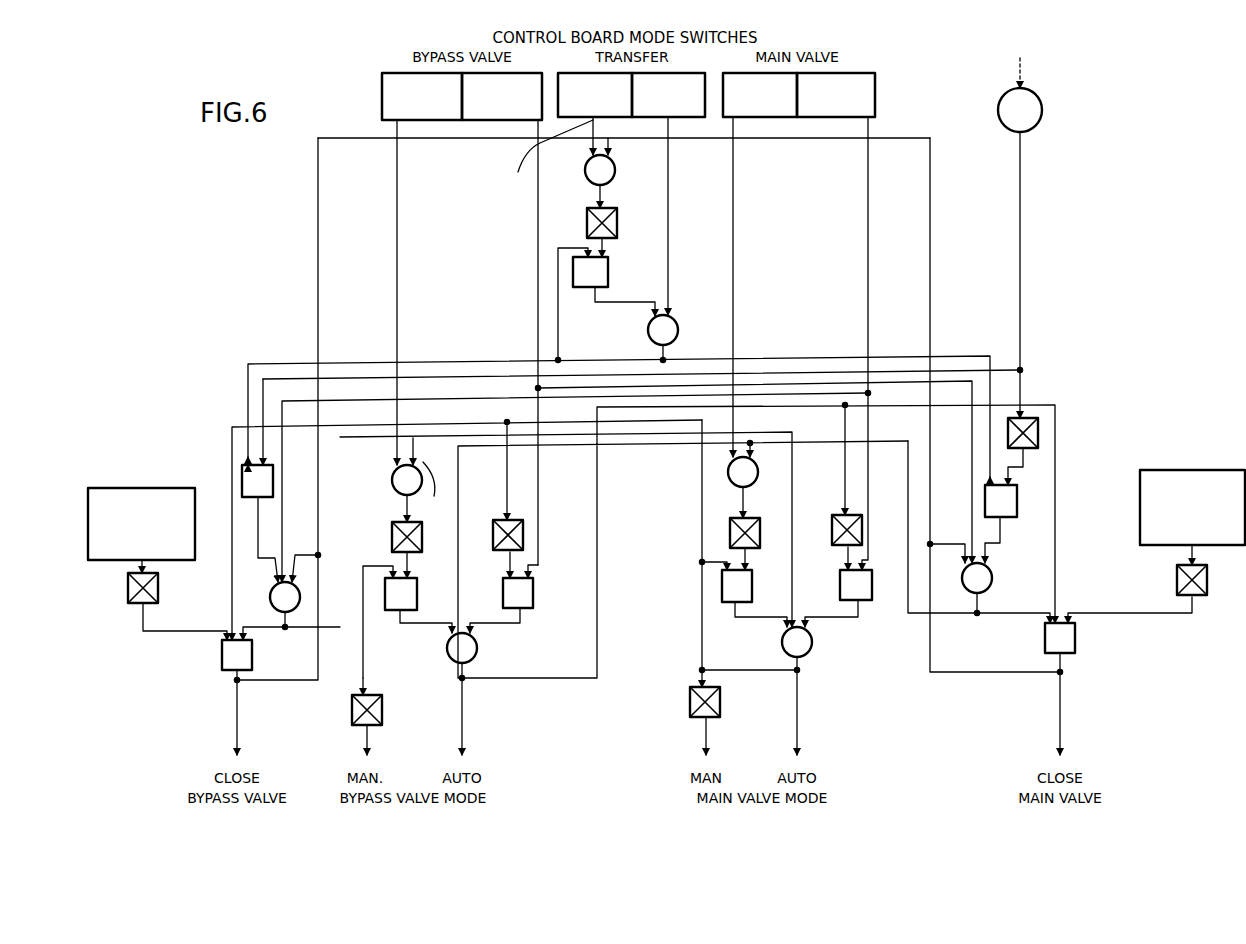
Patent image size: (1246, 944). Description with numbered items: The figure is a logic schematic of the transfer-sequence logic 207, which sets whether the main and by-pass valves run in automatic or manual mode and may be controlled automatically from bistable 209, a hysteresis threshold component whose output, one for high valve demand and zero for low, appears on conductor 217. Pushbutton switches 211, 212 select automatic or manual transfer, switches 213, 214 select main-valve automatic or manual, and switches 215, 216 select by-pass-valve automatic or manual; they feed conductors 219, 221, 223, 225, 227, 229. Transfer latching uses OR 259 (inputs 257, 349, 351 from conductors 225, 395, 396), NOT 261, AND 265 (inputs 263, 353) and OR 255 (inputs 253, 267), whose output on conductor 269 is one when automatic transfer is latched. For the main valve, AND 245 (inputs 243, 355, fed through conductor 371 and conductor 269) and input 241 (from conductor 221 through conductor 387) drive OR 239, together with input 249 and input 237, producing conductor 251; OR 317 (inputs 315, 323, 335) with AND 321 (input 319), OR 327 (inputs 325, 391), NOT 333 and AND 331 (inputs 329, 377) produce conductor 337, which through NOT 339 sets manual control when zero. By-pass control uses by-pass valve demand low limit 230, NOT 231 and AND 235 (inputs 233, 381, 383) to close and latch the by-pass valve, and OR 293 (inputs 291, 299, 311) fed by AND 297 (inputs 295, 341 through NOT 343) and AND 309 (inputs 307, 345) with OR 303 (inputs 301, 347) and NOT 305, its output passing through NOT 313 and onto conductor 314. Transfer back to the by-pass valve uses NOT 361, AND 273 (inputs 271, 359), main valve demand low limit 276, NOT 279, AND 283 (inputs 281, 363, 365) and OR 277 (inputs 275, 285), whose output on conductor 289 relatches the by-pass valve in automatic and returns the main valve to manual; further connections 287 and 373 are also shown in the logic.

The transfer-sequence logic 207 is at (281, 196).
The bistable 209 is at (1036, 124).
The transfer switch 211 is at (668, 73).
The transfer switch 212 is at (566, 73).
The main valve switch 213 is at (852, 73).
The main valve switch 214 is at (748, 73).
The by-pass-valve automatic pushbutton 215 is at (538, 133).
The by-pass valve manual switch 216 is at (388, 73).
The conductor 217 is at (1020, 242).
The conductor 219 is at (668, 248).
The conductor 221 is at (868, 248).
The conductor 223 is at (501, 218).
The conductor 225 is at (537, 153).
The conductor 227 is at (733, 174).
The conductor 229 is at (397, 168).
The by-pass valve demand low limit 230 is at (118, 488).
The NOT 231 is at (158, 584).
The input 233 is at (222, 652).
The AND 235 is at (252, 663).
The input 237 is at (305, 558).
The OR 239 is at (275, 607).
The input 241 is at (282, 540).
The input 243 is at (268, 462).
The AND 245 is at (242, 472).
The input 249 is at (274, 586).
The conductor 251 is at (413, 438).
The input 253 is at (674, 318).
The OR 255 is at (677, 332).
The input 257 is at (590, 162).
The OR 259 is at (612, 180).
The NOT 261 is at (587, 216).
The input 263 is at (606, 250).
The AND 265 is at (610, 278).
The input 267 is at (650, 315).
The conductor 269 is at (334, 364).
The input 271 is at (984, 482).
The AND 273 is at (1008, 532).
The input 275 is at (834, 520).
The main valve demand low limit 276 is at (1176, 470).
The OR 277 is at (990, 584).
The NOT 279 is at (1177, 580).
The input 281 is at (1076, 628).
The AND 283 is at (1072, 652).
The input 285 is at (960, 578).
The line 287 is at (968, 556).
The conductor 289 is at (636, 446).
The input 291 is at (460, 630).
The OR 293 is at (476, 652).
The input 295 is at (534, 572).
The AND 297 is at (533, 596).
The input 299 is at (472, 632).
The input 301 is at (396, 465).
The OR 303 is at (392, 486).
The NOT 305 is at (392, 532).
The input 307 is at (407, 574).
The AND 309 is at (385, 610).
The input 311 is at (448, 634).
The NOT 313 is at (382, 718).
The conductor 314 is at (520, 680).
The input 315 is at (792, 618).
The OR 317 is at (802, 660).
The input 319 is at (870, 570).
The AND 321 is at (862, 604).
The input 323 is at (808, 628).
The input 325 is at (733, 460).
The OR 327 is at (732, 480).
The input 329 is at (752, 572).
The AND 331 is at (722, 604).
The NOT 333 is at (750, 512).
The input 335 is at (782, 630).
The conductor 337 is at (234, 427).
The NOT 339 is at (690, 703).
The input 341 is at (503, 572).
The NOT 343 is at (504, 520).
The input 345 is at (388, 570).
The input 347 is at (431, 488).
The input 349 is at (595, 145).
The input 351 is at (610, 148).
The input 353 is at (584, 250).
The input 355 is at (243, 462).
The input 359 is at (1014, 484).
The NOT 361 is at (1040, 432).
The input 363 is at (1046, 626).
The input 365 is at (1058, 618).
The conductor 371 is at (1000, 356).
The bus line 373 is at (972, 400).
The input 377 is at (722, 570).
The input 381 is at (228, 634).
The input 383 is at (250, 636).
The conductor 387 is at (334, 401).
The input 391 is at (754, 452).
The conductor 395 is at (318, 222).
The conductor 396 is at (930, 240).